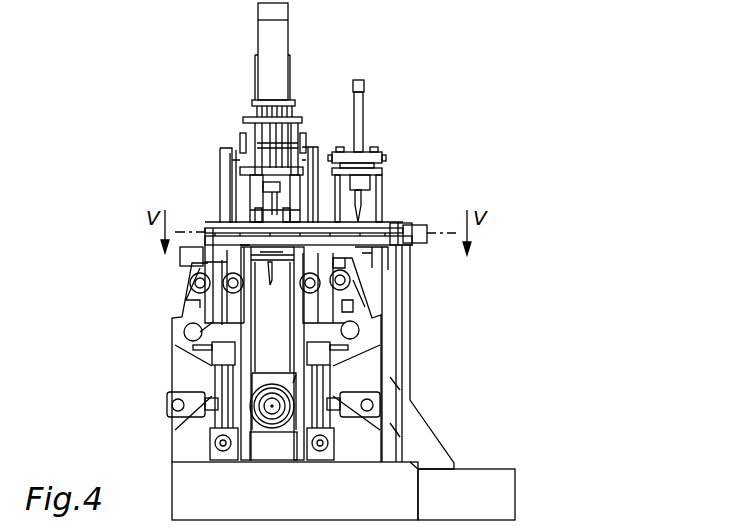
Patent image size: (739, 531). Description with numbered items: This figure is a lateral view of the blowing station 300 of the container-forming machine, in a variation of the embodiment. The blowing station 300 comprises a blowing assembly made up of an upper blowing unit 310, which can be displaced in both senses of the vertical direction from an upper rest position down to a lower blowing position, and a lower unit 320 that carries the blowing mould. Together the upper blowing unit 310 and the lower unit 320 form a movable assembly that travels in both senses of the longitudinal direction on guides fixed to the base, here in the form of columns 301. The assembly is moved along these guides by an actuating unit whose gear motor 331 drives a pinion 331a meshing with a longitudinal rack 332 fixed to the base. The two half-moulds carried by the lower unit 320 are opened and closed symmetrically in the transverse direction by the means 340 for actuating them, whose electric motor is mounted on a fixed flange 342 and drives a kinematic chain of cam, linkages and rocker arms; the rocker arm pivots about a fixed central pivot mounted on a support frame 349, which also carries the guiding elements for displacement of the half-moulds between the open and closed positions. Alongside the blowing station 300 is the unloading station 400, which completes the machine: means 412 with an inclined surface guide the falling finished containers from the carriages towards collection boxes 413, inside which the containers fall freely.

The blowing station 300 is at (243, 106).
The upper blowing unit 310 is at (210, 178).
The lower unit 320 is at (157, 326).
The support frame 349 is at (215, 322).
The means for actuating the half-moulds 340 is at (272, 406).
The fixed flange 342 is at (293, 383).
The unloading station 400 is at (430, 390).
The columns 301 is at (212, 437).
The means with an inclined surface 412 is at (443, 447).
The collection boxes 413 is at (515, 486).
The gear motor 331 is at (151, 6).
The pinion 331a is at (65, 26).
The longitudinal rack 332 is at (62, 0).